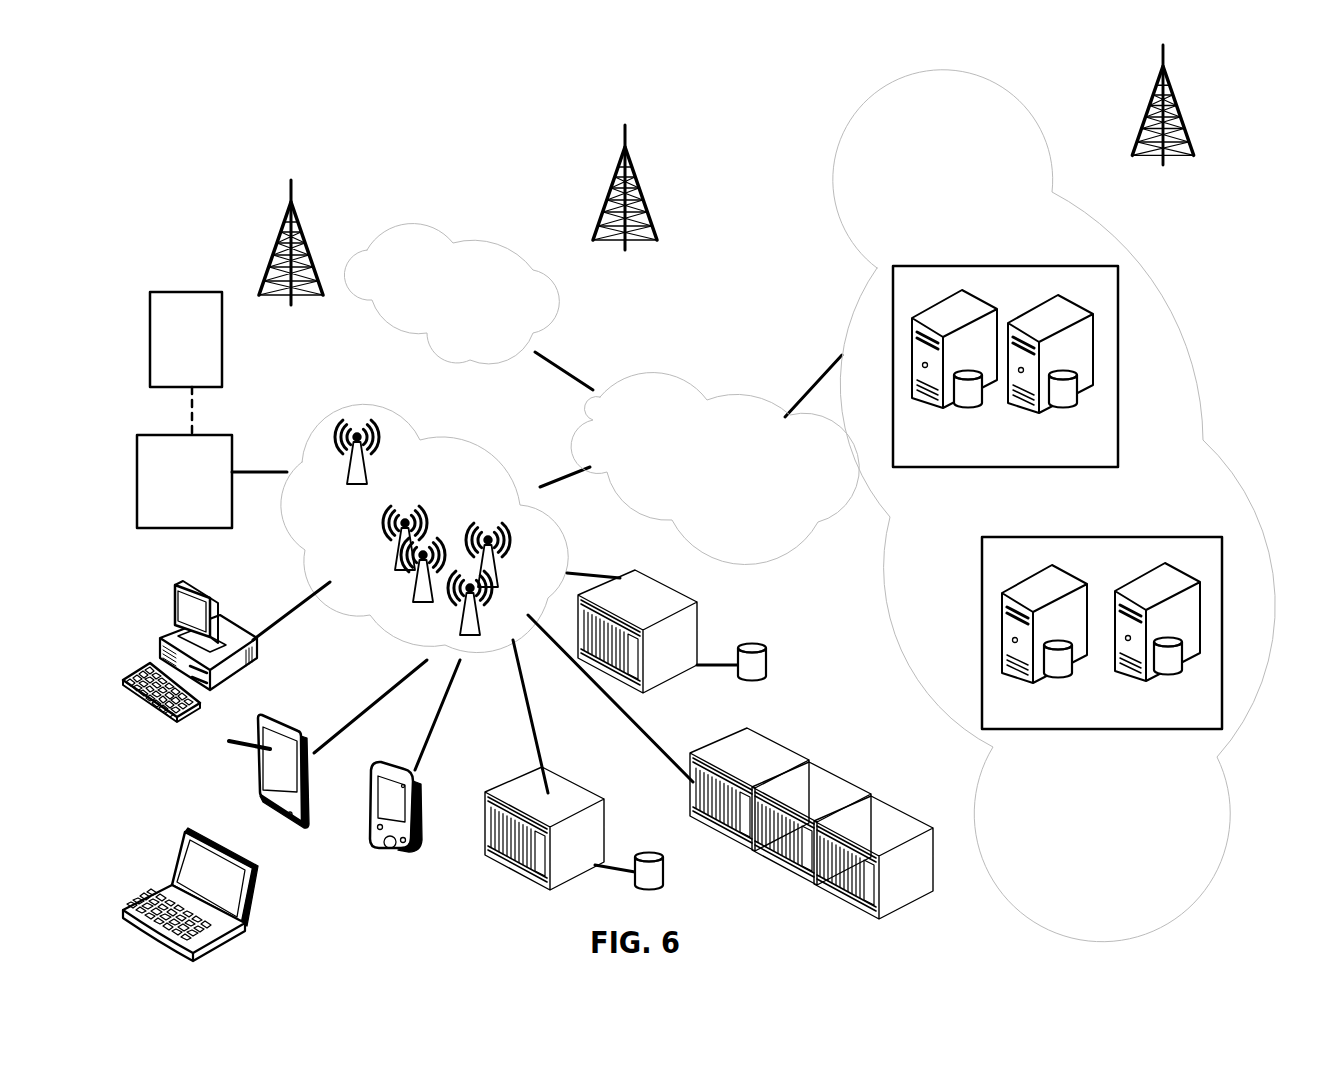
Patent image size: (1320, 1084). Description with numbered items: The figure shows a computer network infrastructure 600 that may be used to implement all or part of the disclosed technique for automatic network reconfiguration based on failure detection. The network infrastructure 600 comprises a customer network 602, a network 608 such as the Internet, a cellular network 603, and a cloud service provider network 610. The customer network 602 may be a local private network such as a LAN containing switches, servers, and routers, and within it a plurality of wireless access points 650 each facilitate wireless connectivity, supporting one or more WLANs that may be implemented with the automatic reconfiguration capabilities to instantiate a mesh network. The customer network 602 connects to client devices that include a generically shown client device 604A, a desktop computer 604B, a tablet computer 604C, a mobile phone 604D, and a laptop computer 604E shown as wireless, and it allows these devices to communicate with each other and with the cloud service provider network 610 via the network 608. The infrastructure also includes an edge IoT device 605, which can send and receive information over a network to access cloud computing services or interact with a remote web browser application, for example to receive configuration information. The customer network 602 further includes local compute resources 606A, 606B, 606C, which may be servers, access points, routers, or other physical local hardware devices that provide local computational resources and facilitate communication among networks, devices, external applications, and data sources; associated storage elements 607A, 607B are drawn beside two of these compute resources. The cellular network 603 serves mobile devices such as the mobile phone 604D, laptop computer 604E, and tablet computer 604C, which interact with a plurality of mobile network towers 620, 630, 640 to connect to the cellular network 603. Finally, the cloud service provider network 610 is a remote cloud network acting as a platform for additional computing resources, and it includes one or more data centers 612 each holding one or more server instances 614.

The computer network infrastructure 600 is at (375, 155).
The customer network 602 is at (435, 442).
The cellular network 603 is at (482, 243).
The client device 604A is at (227, 435).
The desktop computer 604B is at (203, 590).
The tablet computer 604C is at (283, 715).
The mobile phone 604D is at (420, 775).
The laptop computer 604E is at (253, 873).
The edge IoT device 605 is at (167, 292).
The local compute resource 606A is at (548, 793).
The local compute resource 606B is at (697, 620).
The local compute resource 606C is at (765, 728).
The storage resource 607A is at (662, 877).
The storage resource 607B is at (765, 663).
The network 608 is at (650, 368).
The cloud service provider network 610 is at (1163, 267).
The data center 612 is at (933, 268).
The server instance 614 is at (960, 407).
The mobile network tower 620 is at (625, 206).
The mobile network tower 630 is at (291, 262).
The mobile network tower 640 is at (1162, 125).
The wireless access point 650 is at (372, 450).